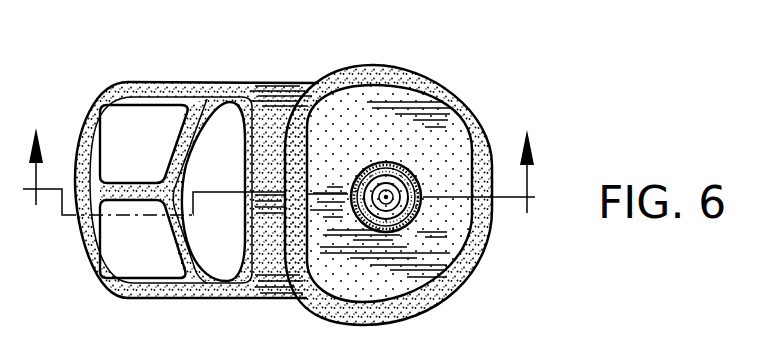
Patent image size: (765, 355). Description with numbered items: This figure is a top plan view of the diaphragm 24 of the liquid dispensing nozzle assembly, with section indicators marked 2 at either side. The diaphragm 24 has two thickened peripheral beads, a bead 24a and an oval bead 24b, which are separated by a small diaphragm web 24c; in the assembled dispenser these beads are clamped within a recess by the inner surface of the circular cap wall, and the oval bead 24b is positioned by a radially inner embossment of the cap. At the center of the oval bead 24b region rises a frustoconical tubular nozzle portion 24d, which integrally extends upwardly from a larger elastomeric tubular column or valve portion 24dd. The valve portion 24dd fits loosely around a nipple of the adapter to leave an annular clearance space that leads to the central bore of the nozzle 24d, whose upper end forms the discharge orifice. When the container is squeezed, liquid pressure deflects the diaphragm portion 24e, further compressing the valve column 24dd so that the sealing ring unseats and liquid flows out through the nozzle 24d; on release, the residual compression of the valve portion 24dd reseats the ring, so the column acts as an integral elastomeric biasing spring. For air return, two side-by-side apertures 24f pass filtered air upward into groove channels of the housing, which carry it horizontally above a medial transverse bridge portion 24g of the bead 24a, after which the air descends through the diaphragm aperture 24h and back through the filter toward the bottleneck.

The section line 2- 2 is at (279, 189).
The diaphragm 24 is at (153, 76).
The peripheral bead 24a is at (112, 100).
The oval bead 24b is at (449, 114).
The diaphragm web 24c is at (277, 113).
The tubular nozzle portion 24d is at (415, 235).
The tubular valve portion 24dd is at (388, 236).
The diaphragm portion 24e is at (348, 182).
The apertures 24f is at (113, 138).
The medial transverse bridge portion 24g is at (178, 253).
The diaphragm aperture 24h is at (227, 265).